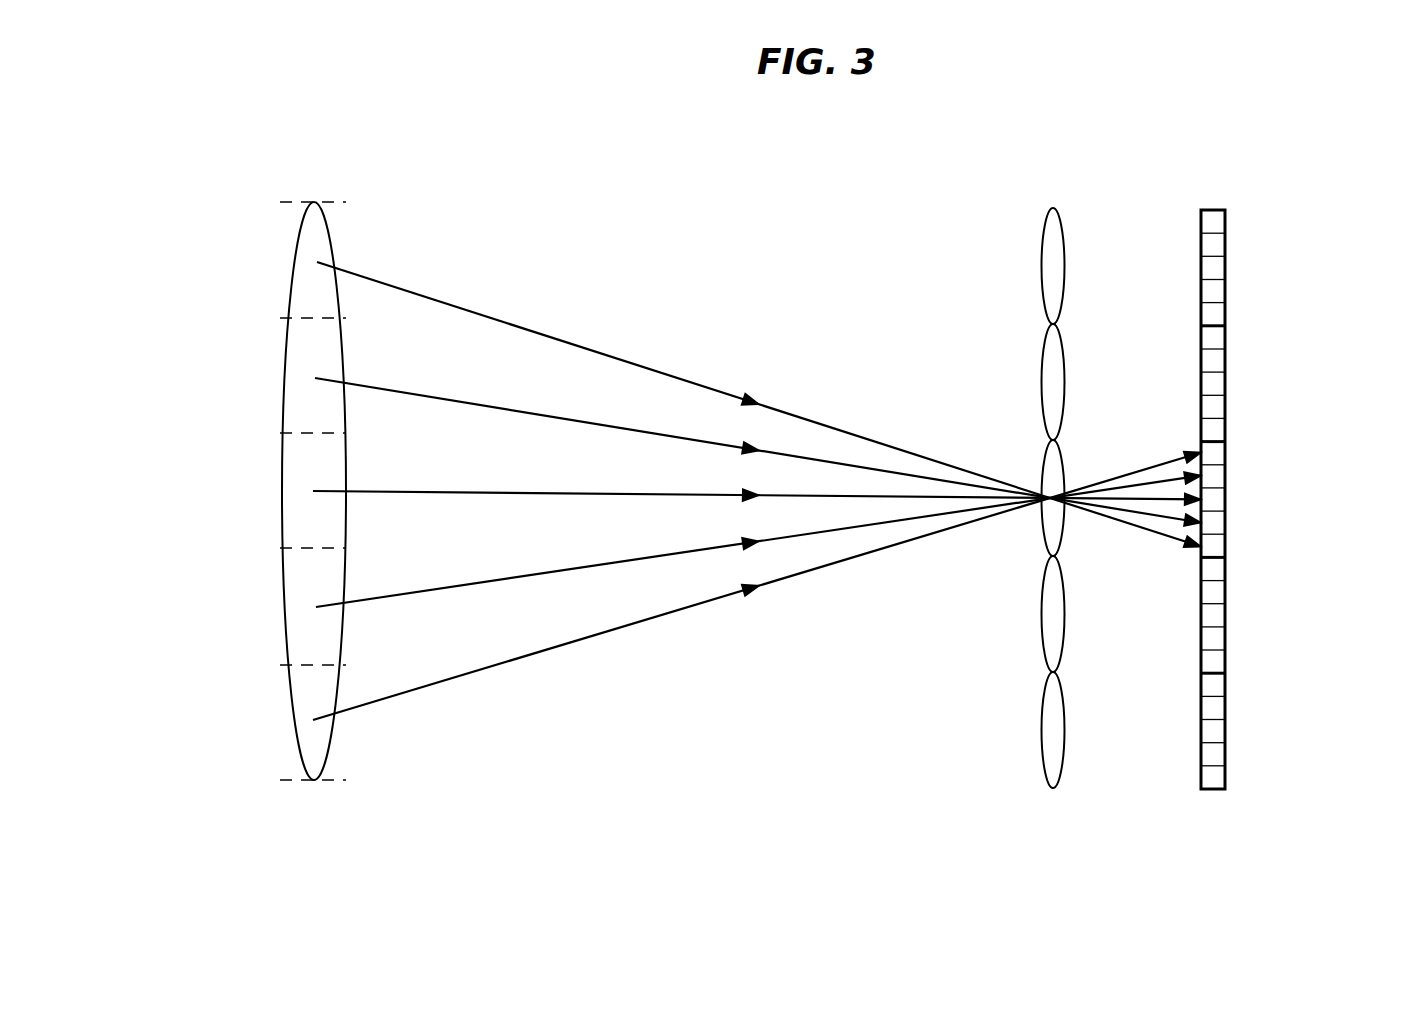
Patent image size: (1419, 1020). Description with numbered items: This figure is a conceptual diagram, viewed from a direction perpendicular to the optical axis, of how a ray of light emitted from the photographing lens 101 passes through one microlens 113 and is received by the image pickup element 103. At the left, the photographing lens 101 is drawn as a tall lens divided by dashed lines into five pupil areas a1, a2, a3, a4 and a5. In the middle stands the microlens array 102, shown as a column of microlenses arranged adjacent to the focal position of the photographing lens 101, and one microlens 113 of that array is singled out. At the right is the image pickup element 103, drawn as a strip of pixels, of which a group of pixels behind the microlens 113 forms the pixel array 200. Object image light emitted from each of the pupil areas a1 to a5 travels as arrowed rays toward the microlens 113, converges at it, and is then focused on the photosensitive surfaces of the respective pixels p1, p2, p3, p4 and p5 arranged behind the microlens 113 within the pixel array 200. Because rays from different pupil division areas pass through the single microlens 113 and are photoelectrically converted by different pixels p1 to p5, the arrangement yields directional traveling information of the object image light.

The photographing lens 101 is at (312, 216).
The microlens array 102 is at (1030, 455).
The image pickup element 103 is at (1224, 456).
The microlens 113 is at (1050, 473).
The pixel array 200 is at (1200, 447).
The pupil area a1 is at (716, 398).
The pupil area a2 is at (716, 446).
The pupil area a3 is at (716, 493).
The pupil area a4 is at (716, 547).
The pupil area a5 is at (716, 593).
The pixel p1 is at (1227, 547).
The pixel p2 is at (1227, 523).
The pixel p3 is at (1227, 498).
The pixel p4 is at (1227, 473).
The pixel p5 is at (1227, 452).